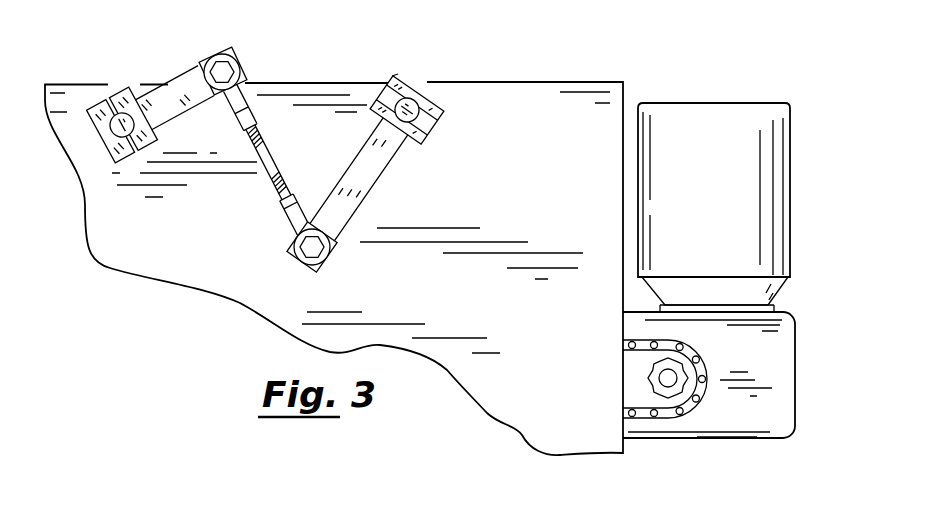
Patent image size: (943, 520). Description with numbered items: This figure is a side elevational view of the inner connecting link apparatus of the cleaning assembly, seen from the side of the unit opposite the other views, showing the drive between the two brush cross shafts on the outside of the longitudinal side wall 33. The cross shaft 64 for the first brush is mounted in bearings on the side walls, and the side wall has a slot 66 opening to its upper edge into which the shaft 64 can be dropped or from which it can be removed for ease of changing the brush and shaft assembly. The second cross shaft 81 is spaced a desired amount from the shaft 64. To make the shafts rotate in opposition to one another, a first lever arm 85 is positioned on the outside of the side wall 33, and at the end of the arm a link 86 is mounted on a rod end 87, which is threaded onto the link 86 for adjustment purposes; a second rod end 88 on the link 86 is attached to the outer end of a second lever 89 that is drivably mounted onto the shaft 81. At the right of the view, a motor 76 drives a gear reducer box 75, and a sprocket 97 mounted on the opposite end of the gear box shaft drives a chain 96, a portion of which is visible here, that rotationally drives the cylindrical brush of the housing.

The side wall 33 is at (523, 80).
The cross shaft 64 is at (410, 117).
The slot 66 is at (421, 90).
The gear reducer box 75 is at (782, 377).
The motor 76 is at (770, 175).
The cross shaft 81 is at (110, 126).
The first lever arm 85 is at (372, 177).
The link 86 is at (268, 160).
The rod end 87 is at (290, 215).
The second rod end 88 is at (240, 103).
The second lever 89 is at (175, 85).
The chain 96 is at (658, 420).
The sprocket 97 is at (688, 385).